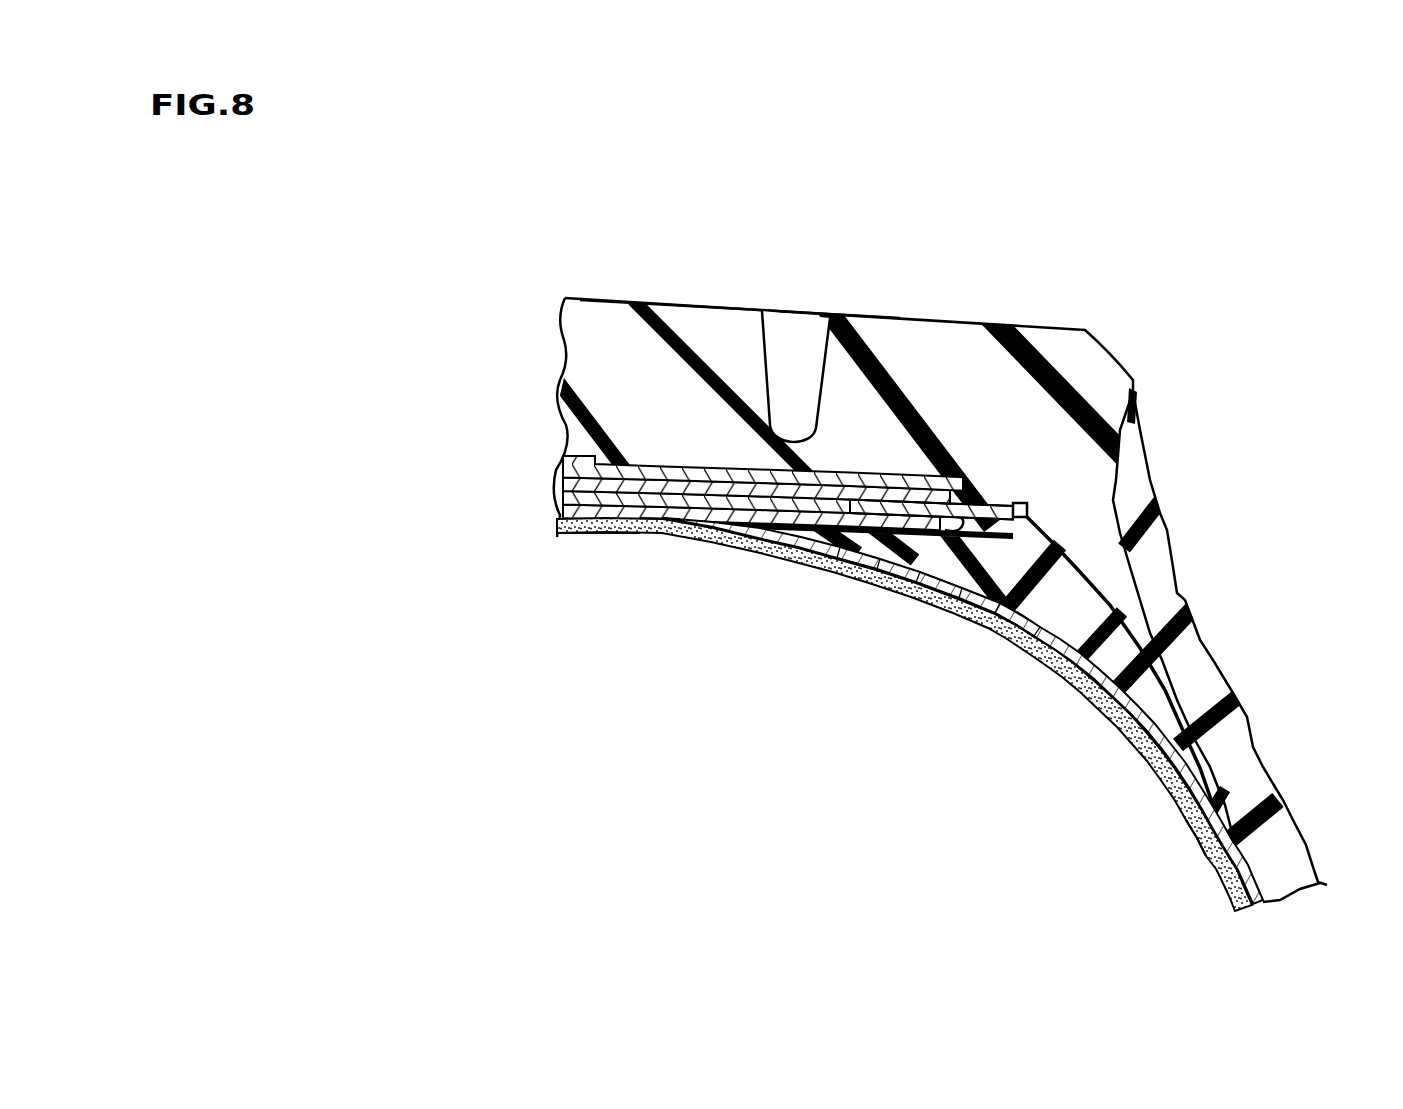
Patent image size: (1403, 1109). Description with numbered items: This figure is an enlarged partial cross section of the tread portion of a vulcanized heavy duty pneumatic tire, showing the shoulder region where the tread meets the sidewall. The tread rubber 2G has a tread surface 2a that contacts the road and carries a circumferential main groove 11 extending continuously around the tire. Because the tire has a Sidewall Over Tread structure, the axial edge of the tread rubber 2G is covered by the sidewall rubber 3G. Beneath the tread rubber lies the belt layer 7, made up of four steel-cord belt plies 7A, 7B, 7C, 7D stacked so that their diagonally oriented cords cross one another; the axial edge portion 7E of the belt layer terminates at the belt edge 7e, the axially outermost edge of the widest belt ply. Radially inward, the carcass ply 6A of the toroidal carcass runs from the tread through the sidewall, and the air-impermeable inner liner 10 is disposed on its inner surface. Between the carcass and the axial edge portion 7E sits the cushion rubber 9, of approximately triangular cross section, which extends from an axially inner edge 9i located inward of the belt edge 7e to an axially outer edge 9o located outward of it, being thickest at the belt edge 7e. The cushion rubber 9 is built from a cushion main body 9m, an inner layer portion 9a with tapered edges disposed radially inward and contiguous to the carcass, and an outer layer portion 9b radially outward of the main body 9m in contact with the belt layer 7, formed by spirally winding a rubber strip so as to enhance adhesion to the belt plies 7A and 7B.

The tread surface 2a is at (607, 300).
The tread rubber 2G is at (965, 340).
The sidewall rubber 3G is at (1197, 680).
The circumferential main groove 11 is at (791, 350).
The belt layer 7 is at (715, 491).
The belt ply 7A is at (565, 513).
The belt ply 7B is at (565, 497).
The belt ply 7C is at (565, 482).
The belt ply 7D is at (712, 457).
The axial edge portion of the belt layer 7E is at (907, 462).
The belt edge 7e is at (1027, 511).
The cushion rubber 9 is at (910, 742).
The inner layer portion 9a is at (1042, 597).
The outer layer portion 9b is at (877, 563).
The cushion main body 9m is at (980, 590).
The axially inner edge 9i is at (657, 532).
The axially outer edge 9o is at (1216, 868).
The carcass ply 6A is at (790, 545).
The inner liner 10 is at (597, 527).